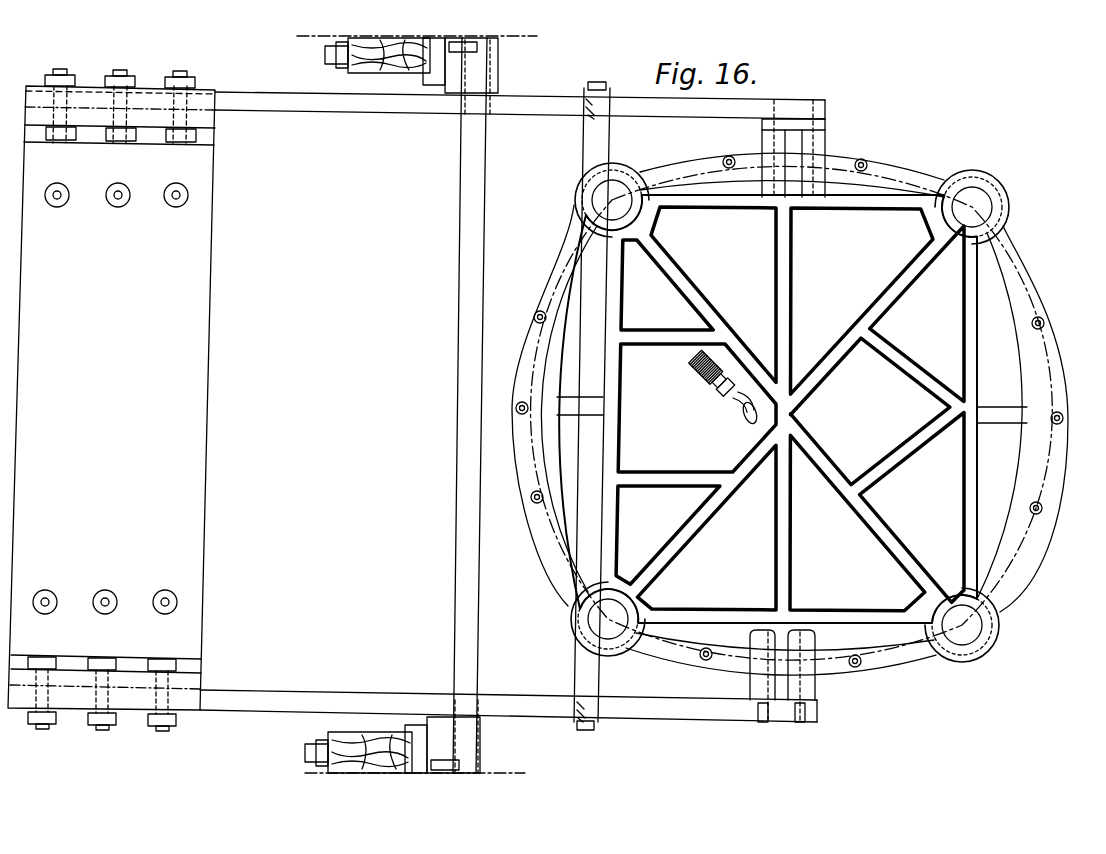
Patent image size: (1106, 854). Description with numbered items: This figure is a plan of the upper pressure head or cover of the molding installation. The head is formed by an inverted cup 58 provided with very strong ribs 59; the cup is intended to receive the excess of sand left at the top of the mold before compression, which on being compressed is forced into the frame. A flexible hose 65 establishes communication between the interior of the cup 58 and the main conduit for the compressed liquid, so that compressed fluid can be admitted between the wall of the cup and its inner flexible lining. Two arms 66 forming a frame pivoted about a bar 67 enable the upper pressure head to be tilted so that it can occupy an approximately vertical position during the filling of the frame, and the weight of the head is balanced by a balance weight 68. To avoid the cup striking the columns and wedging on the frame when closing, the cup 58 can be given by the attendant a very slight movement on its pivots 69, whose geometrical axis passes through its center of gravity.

The inverted cup 58 is at (1056, 384).
The ribs 59 is at (897, 282).
The flexible hose 65 is at (697, 366).
The arms 66 is at (290, 703).
The bar 67 is at (470, 364).
The balance weight 68 is at (281, 78).
The pivots 69 is at (815, 144).